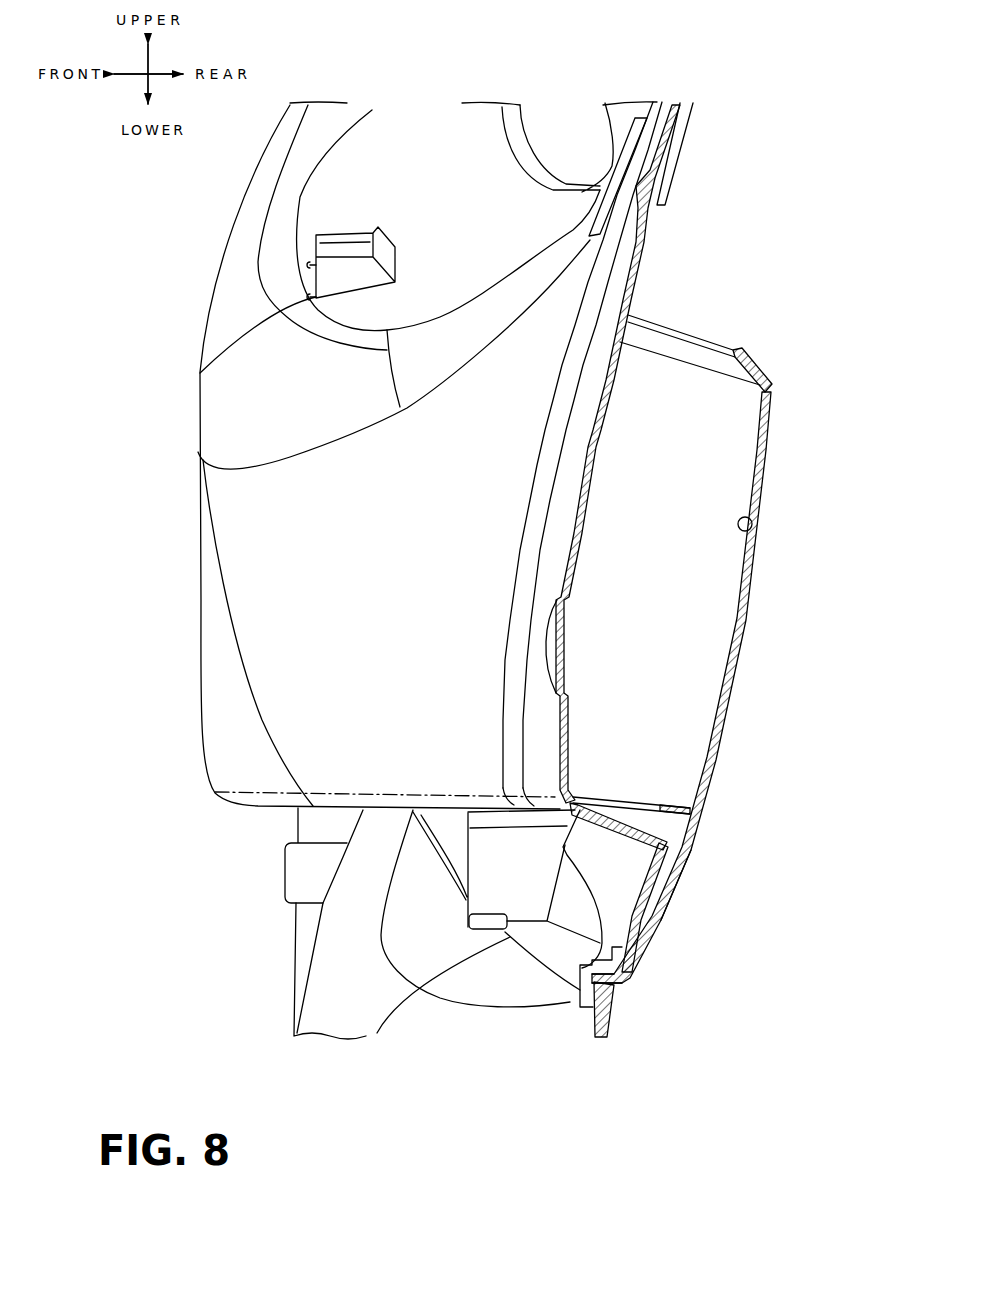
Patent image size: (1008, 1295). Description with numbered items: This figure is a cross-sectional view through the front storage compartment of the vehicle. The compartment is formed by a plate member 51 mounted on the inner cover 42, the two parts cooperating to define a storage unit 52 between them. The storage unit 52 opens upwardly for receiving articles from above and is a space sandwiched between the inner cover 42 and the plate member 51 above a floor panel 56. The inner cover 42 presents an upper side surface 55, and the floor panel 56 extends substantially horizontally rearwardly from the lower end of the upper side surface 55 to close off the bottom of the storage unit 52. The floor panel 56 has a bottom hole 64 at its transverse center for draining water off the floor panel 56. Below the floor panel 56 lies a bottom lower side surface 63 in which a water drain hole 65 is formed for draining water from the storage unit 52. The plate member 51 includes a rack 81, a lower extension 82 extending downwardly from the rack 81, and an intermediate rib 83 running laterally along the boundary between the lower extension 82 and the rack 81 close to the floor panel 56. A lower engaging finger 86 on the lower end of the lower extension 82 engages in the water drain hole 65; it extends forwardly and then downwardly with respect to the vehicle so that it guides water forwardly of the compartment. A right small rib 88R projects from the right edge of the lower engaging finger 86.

The inner cover 42 is at (185, 375).
The plate member 51 is at (774, 430).
The storage unit 52 is at (664, 533).
The upper side surface 55 is at (600, 446).
The floor panel 56 is at (612, 818).
The bottom lower side surface 63 is at (641, 912).
The bottom hole 64 is at (661, 834).
The water drain hole 65 is at (638, 960).
The rack 81 is at (752, 523).
The lower extension 82 is at (671, 883).
The intermediate rib 83 is at (668, 810).
The lower engaging finger 86 is at (588, 1031).
The right small rib 88R is at (583, 993).